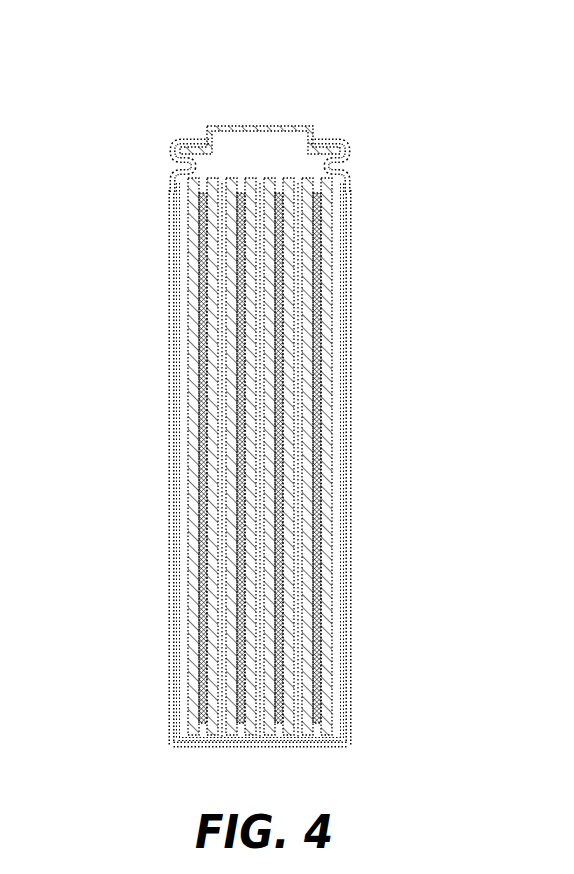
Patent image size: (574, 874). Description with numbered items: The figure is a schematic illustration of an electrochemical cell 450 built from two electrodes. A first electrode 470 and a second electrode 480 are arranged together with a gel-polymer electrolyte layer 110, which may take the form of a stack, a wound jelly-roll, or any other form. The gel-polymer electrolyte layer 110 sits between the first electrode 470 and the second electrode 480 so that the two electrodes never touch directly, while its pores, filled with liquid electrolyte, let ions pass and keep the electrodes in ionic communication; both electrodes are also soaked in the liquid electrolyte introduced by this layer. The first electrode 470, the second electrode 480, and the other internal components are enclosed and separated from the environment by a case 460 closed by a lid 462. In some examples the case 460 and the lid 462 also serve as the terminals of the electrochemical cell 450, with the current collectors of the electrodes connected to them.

The electrochemical cell 450 is at (146, 113).
The lid 462 is at (286, 125).
The case 460 is at (169, 210).
The first electrode 470 is at (186, 289).
The second electrode 480 is at (200, 350).
The gel-polymer electrolyte layer 110 is at (194, 440).